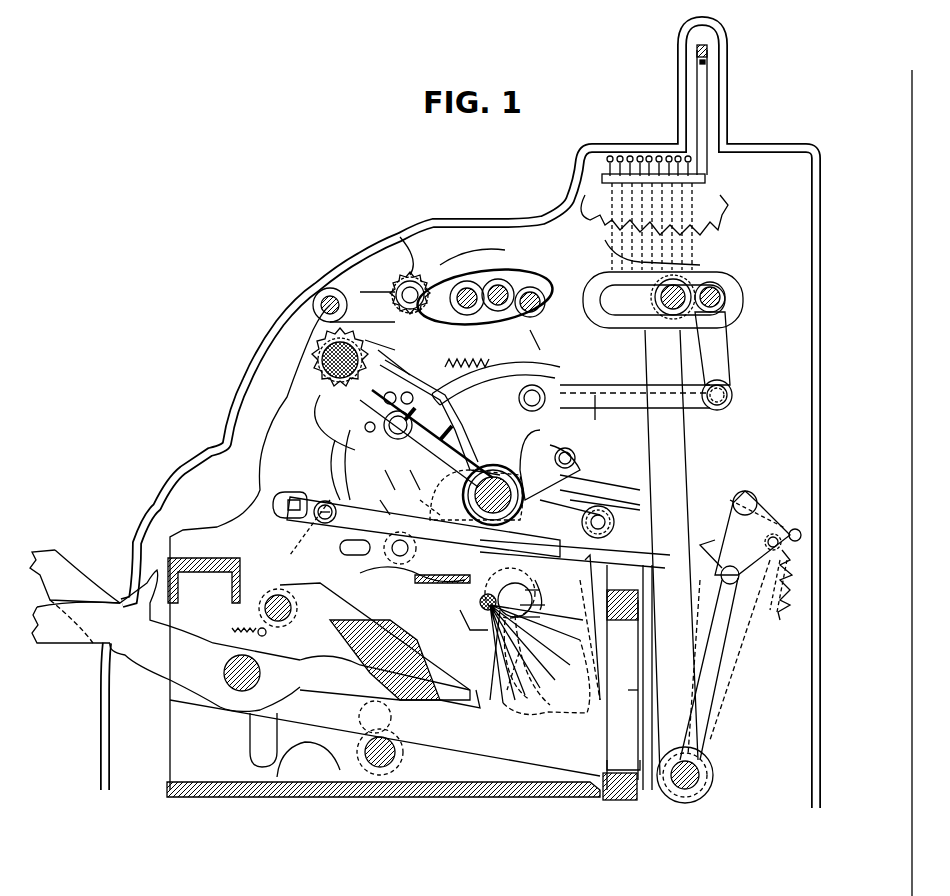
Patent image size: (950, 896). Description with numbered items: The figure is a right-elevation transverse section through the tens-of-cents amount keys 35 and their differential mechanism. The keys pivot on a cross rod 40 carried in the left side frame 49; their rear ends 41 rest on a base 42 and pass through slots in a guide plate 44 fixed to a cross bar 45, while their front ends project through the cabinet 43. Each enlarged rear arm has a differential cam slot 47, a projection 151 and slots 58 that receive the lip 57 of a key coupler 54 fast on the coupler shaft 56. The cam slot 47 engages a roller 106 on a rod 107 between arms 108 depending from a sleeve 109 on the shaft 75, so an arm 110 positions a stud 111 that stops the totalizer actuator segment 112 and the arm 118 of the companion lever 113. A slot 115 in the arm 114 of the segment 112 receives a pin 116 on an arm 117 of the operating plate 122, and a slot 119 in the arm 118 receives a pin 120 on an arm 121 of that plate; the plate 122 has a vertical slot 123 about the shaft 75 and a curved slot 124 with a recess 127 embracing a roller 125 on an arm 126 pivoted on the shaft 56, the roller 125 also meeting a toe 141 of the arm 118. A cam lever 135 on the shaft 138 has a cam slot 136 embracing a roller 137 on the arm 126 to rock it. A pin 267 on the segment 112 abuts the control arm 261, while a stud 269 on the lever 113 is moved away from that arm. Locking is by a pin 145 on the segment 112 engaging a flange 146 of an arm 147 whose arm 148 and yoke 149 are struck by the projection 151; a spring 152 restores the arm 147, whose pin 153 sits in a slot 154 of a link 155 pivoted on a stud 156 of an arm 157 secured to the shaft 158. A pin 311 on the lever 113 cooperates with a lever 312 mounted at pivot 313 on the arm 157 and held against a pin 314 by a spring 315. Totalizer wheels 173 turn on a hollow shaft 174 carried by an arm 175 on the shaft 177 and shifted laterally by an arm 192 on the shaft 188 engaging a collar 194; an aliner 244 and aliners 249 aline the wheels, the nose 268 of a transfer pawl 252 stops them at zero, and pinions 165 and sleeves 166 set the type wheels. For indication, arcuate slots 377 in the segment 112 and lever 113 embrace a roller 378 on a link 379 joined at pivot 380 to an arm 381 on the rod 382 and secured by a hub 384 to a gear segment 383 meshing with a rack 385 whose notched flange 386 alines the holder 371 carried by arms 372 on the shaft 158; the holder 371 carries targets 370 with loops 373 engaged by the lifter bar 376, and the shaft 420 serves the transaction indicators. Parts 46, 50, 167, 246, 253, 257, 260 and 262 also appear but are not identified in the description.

The amount keys 35 is at (98, 640).
The cross rod 40 is at (236, 665).
The rear ends of the keys 41 is at (623, 751).
The base 42 is at (618, 800).
The cabinet 43 is at (131, 555).
The guide plate 44 is at (625, 620).
The cross bar 45 is at (629, 677).
The frame plate 46 is at (624, 681).
The differential cam slot 47 is at (512, 640).
The left side frame 49 is at (170, 722).
The bracket 50 is at (228, 558).
The key coupler 54 is at (322, 620).
The coupler shaft 56 is at (272, 598).
The lip or bar 57 is at (450, 690).
The slots 58 is at (466, 690).
The shaft 75 is at (523, 495).
The roller 106 is at (478, 605).
The rod 107 is at (490, 655).
The arms 108 is at (511, 587).
The sleeve 109 is at (495, 465).
The arm 110 is at (410, 481).
The stud 111 is at (394, 476).
The totalizer actuator segment 112 is at (360, 428).
The companion lever 113 is at (515, 410).
The arm of the actuator segment 114 is at (590, 505).
The slot 115 is at (570, 494).
The pin 116 is at (605, 518).
The arm 117 is at (572, 544).
The arm of the lever 118 is at (350, 536).
The slot 119 is at (412, 540).
The pin 120 is at (382, 570).
The arm 121 is at (418, 503).
The operating plate 122 is at (585, 627).
The vertical slot 123 is at (575, 529).
The curved slot 124 is at (547, 601).
The roller 125 is at (551, 587).
The arm 126 is at (415, 648).
The recess 127 is at (540, 615).
The cam lever 135 is at (308, 759).
The cam slot 136 is at (248, 742).
The roller 137 is at (382, 716).
The shaft 138 is at (400, 760).
The toe 141 is at (554, 583).
The pin 145 is at (396, 440).
The flange 146 is at (350, 452).
The arm 147 is at (350, 462).
The rearwardly extending arm 148 is at (355, 546).
The yoke 149 is at (427, 565).
The projection 151 is at (462, 630).
The spring 152 is at (212, 602).
The pin 153 is at (323, 500).
The slot 154 is at (298, 515).
The link 155 is at (378, 503).
The stud 156 is at (725, 583).
The arm 157 is at (728, 666).
The shaft 158 is at (700, 776).
The pinions 165 is at (320, 375).
The sleeves 166 is at (324, 422).
The gear 167 is at (315, 355).
The totalizer wheels 173 is at (405, 250).
The hollow shaft 174 is at (400, 282).
The arm 175 is at (468, 250).
The shaft 177 is at (505, 283).
The shaft 188 is at (322, 295).
The arm 192 is at (367, 282).
The collar 194 is at (390, 300).
The aliner 244 is at (512, 270).
The stud 246 is at (538, 296).
The aliners 249 is at (526, 340).
The transfer pawl 252 is at (480, 322).
The stud 253 is at (462, 285).
The arm 257 is at (377, 330).
The arm 260 is at (388, 352).
The control arm 261 is at (455, 428).
The arc segment 262 is at (496, 377).
The pin 267 is at (370, 410).
The nose 268 is at (405, 372).
The stud 269 is at (493, 390).
The pin 311 is at (575, 455).
The lever 312 is at (610, 478).
The pivot 313 is at (748, 492).
The pin 314 is at (768, 540).
The spring 315 is at (784, 585).
The amount targets 370 is at (605, 158).
The holders 371 is at (610, 272).
The arms 372 is at (648, 345).
The loops 373 is at (697, 62).
The lifter bar 376 is at (703, 48).
The arcuate slot 377 is at (488, 356).
The roller 378 is at (552, 380).
The link 379 is at (609, 413).
The pivot 380 is at (732, 393).
The arm 381 is at (710, 345).
The rod 382 is at (660, 305).
The gear segment 383 is at (612, 253).
The hub 384 is at (661, 297).
The rack 385 is at (585, 200).
The flange 386 is at (602, 180).
The shaft 420 is at (725, 297).